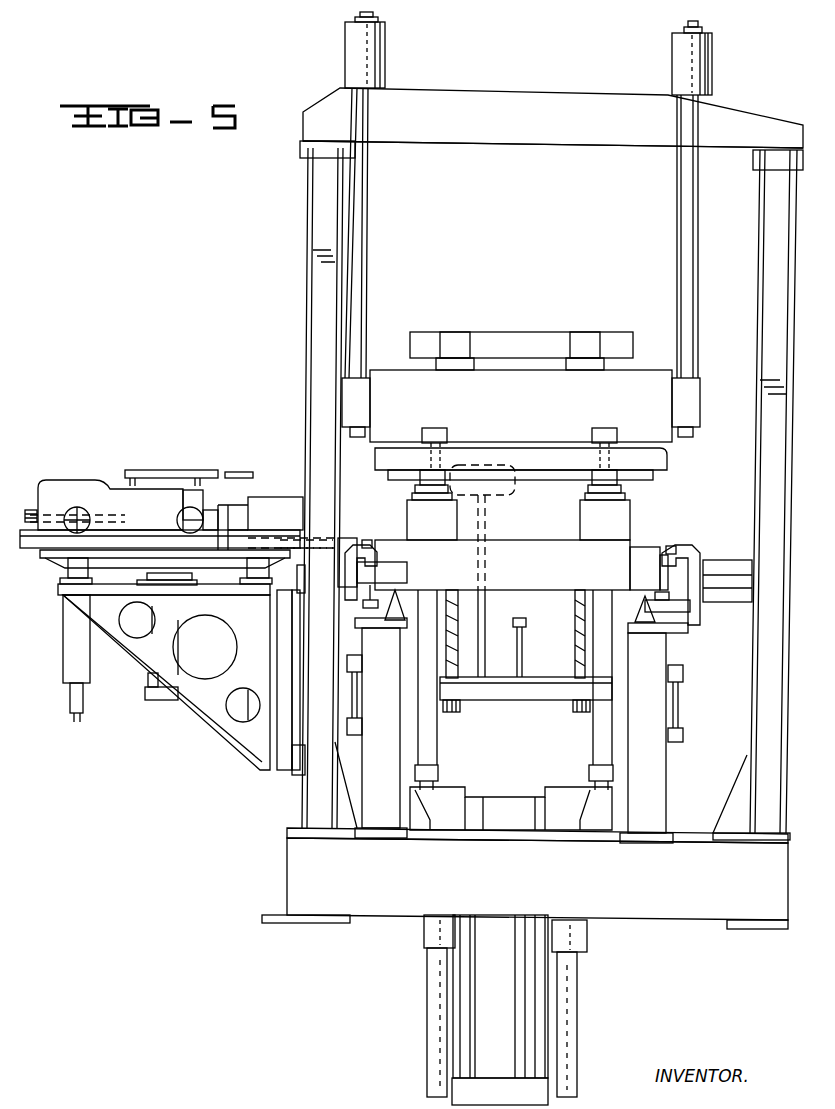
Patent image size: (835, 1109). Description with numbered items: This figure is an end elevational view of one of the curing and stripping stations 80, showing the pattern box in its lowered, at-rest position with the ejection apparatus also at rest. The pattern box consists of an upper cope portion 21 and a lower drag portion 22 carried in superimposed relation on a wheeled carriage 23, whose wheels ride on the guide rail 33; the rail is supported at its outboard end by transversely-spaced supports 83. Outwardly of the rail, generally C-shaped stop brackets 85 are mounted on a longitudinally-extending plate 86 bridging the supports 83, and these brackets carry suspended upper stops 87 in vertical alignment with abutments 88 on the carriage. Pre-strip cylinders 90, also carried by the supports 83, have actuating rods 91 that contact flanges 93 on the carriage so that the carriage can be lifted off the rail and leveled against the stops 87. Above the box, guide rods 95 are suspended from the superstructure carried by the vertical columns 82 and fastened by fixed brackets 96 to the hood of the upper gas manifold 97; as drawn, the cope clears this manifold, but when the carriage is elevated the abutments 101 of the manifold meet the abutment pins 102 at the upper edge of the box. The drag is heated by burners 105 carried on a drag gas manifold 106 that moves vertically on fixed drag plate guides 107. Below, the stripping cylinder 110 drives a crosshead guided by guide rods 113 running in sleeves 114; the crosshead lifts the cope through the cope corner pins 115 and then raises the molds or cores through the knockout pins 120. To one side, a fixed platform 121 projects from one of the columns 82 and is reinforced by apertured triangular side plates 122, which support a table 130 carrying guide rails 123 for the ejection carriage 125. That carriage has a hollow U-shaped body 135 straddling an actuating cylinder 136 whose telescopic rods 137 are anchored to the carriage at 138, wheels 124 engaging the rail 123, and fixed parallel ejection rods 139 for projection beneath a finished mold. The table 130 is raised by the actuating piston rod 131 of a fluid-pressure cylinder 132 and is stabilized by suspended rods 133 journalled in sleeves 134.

The curing and stripping station 80 is at (590, 95).
The vertically-extending columns 82 is at (322, 300).
The guide rods 95 is at (368, 237).
The gas manifold 97 is at (412, 352).
The fixed brackets 96 is at (370, 412).
The abutments 101 is at (440, 442).
The abutment pins 102 is at (436, 468).
The cope portion 21 is at (650, 468).
The drag portion 22 is at (518, 520).
The wheeled carriage 23 is at (517, 578).
The stop brackets 85 is at (350, 548).
The upper stops 87 is at (366, 544).
The abutments 88 is at (365, 568).
The flanges 93 is at (370, 580).
The actuating rods 91 is at (375, 606).
The longitudinally-extending plate 86 is at (676, 633).
The guide rail 33 is at (398, 620).
The knockout pins 120 is at (487, 616).
The burners 105 is at (522, 656).
The drag plate guides 107 is at (580, 652).
The drag gas manifold 106 is at (546, 694).
The cope corner pins 115 is at (582, 748).
The pre-strip cylinders 90 is at (360, 718).
The supports 83 is at (690, 790).
The sleeves 114 is at (430, 935).
The guide rods 113 is at (437, 1022).
The stripping cylinder 110 is at (540, 1022).
The ejection carriage 125 is at (71, 470).
The hollow body 135 is at (85, 483).
The ejection rods 139 is at (160, 470).
The wheels 124 is at (77, 515).
The anchor 138 is at (30, 508).
The telescopic cylinder rods 137 is at (236, 512).
The actuating cylinder 136 is at (280, 500).
The table 130 is at (60, 556).
The guide rails 123 is at (135, 546).
The actuating piston rod 131 is at (186, 578).
The sleeves 134 is at (70, 638).
The fixed platform 121 is at (112, 598).
The fluid-pressure actuated cylinder 132 is at (168, 700).
The suspended rods 133 is at (78, 722).
The triangular side plates 122 is at (237, 737).